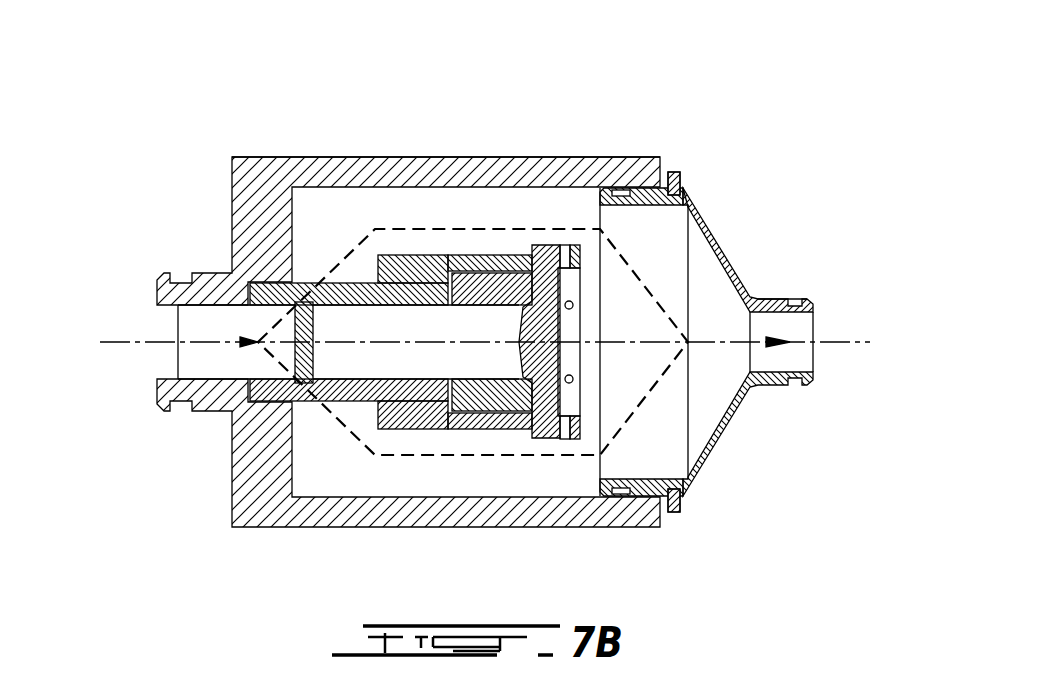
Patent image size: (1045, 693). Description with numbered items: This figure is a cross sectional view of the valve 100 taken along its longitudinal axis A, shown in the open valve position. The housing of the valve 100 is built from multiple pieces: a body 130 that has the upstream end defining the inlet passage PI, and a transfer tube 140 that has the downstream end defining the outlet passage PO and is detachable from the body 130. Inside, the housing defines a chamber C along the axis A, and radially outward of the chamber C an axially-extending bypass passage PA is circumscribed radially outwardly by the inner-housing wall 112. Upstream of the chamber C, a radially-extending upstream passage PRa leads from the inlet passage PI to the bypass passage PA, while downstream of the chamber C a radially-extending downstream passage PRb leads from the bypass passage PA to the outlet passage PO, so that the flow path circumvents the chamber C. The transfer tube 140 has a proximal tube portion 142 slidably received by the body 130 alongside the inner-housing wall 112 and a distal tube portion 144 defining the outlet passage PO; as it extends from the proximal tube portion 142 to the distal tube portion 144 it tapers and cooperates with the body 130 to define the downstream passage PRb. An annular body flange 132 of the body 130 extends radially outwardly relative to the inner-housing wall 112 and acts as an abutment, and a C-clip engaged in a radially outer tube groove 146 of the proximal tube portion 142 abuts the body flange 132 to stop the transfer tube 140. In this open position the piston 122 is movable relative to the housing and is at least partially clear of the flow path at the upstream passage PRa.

The valve 100 is at (822, 160).
The inner-housing wall 112 is at (508, 484).
The piston 122 is at (298, 352).
The body 130 is at (362, 157).
The body flange 132 is at (658, 158).
The transfer tube 140 is at (724, 445).
The proximal tube portion 142 is at (683, 176).
The distal tube portion 144 is at (775, 297).
The tube groove 146 is at (690, 194).
The chamber C is at (463, 340).
The longitudinal axis A is at (840, 330).
The inlet passage PI is at (157, 308).
The outlet passage PO is at (810, 313).
The bypass passage PA is at (428, 453).
The upstream passage PRa is at (332, 420).
The downstream passage PRb is at (633, 417).